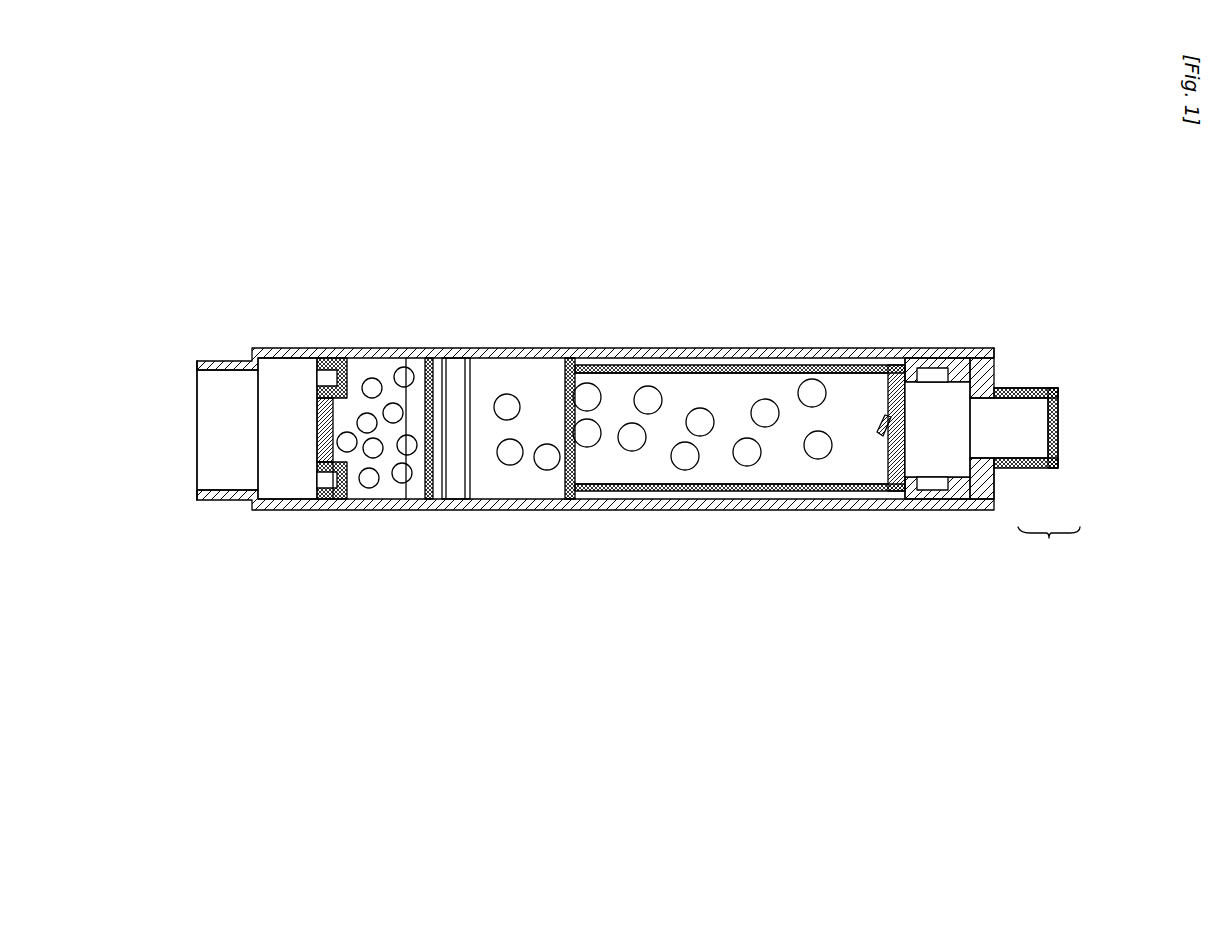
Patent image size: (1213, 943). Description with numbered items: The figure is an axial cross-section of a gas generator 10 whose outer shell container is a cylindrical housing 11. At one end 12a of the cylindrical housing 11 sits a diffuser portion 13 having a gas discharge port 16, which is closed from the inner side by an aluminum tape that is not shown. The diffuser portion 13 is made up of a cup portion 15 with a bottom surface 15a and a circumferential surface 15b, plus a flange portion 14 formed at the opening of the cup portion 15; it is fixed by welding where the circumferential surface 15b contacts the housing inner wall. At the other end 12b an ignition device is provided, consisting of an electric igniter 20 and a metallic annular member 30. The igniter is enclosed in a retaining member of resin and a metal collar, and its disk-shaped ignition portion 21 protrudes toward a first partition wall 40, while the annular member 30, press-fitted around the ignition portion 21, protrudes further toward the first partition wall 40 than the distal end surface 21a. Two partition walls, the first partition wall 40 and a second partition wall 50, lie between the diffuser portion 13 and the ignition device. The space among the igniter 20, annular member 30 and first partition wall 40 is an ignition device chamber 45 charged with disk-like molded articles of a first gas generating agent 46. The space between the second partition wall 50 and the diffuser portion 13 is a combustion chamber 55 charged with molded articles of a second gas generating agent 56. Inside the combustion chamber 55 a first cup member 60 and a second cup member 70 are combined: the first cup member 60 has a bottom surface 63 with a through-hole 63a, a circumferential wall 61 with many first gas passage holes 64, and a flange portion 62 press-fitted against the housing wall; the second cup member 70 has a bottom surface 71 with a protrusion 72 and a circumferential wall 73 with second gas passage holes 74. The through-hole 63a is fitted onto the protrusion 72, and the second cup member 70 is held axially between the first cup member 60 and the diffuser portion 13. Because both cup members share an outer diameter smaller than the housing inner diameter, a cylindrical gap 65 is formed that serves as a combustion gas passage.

The gas generator 10 is at (637, 337).
The cylindrical housing 11 is at (851, 349).
The one end of the cylindrical housing 12a is at (992, 350).
The other end of the cylindrical housing 12b is at (196, 362).
The diffuser portion 13 is at (1049, 543).
The flange portion 14 is at (996, 490).
The cup portion 15 is at (1043, 471).
The bottom surface 15a is at (1059, 430).
The circumferential surface 15b is at (1045, 389).
The gas discharge port 16 is at (1020, 400).
The electric igniter 20 is at (227, 430).
The ignition portion 21 is at (317, 447).
The distal end surface of the ignition portion 21a is at (317, 415).
The annular member 30 is at (333, 500).
The first partition wall 40 is at (408, 358).
The ignition device chamber 45 is at (383, 492).
The first gas generating agent 46 is at (372, 378).
The second partition wall 50 is at (455, 358).
The combustion chamber 55 is at (494, 428).
The second gas generating agent 56 is at (545, 446).
The first cup member 60 is at (748, 493).
The circumferential wall 61 is at (783, 368).
The flange portion 62 is at (545, 350).
The bottom surface 63 is at (890, 390).
The through-hole 63a is at (885, 420).
The first gas passage holes 64 is at (670, 491).
The cylindrical gap 65 is at (718, 365).
The second cup member 70 is at (903, 493).
The bottom surface 71 is at (908, 452).
The protrusion 72 is at (880, 432).
The circumferential wall 73 is at (963, 360).
The second gas passage holes 74 is at (932, 370).